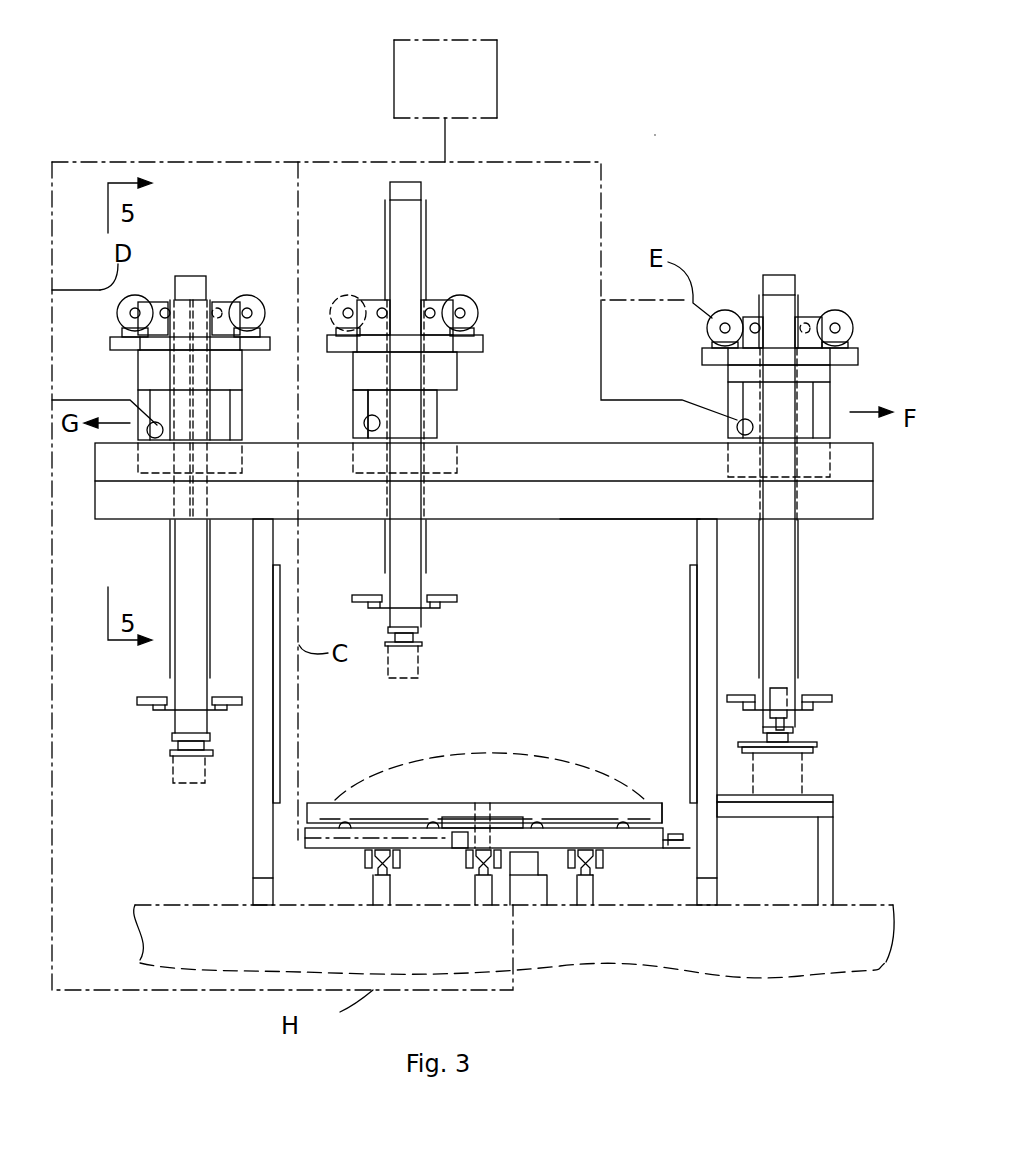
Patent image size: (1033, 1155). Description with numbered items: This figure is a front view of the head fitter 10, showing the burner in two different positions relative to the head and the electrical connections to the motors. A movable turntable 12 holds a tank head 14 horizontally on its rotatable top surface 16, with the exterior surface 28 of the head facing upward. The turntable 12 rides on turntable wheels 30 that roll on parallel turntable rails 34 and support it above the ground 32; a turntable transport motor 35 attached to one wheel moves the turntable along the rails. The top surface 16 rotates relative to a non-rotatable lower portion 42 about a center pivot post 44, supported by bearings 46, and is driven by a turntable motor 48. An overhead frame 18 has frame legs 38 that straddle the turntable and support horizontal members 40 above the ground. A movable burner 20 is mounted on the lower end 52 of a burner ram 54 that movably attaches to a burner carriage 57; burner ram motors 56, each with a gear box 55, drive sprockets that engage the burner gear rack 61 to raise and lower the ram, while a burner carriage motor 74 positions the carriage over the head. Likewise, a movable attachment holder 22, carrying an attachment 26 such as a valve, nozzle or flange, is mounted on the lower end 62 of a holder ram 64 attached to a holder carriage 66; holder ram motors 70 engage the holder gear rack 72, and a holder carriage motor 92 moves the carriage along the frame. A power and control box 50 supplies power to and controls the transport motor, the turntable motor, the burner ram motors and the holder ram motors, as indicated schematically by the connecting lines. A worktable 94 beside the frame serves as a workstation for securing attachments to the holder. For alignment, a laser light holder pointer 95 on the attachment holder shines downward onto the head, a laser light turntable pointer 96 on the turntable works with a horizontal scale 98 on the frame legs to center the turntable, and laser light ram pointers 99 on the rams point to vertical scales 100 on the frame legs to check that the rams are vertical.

The head fitter 10 is at (660, 132).
The movable turntable 12 is at (650, 810).
The tank head 14 is at (517, 757).
The rotatable top surface 16 is at (640, 805).
The overhead frame 18 is at (874, 452).
The movable burner 20 is at (173, 770).
The movable attachment holder 22 is at (818, 746).
The attachment 26 is at (803, 778).
The exterior surface 28 is at (440, 757).
The turntable wheels 30 is at (373, 870).
The ground 32 is at (850, 905).
The turntable rails 34 is at (376, 895).
The turntable transport motor 35 is at (523, 877).
The frame legs 38 is at (253, 820).
The horizontal members 40 is at (610, 521).
The non-rotatable lower portion 42 is at (633, 845).
The center pivot post 44 is at (492, 803).
The bearings 46 is at (340, 822).
The turntable motor 48 is at (452, 840).
The power and control box 50 is at (497, 55).
The lower end of burner ram 52 is at (172, 736).
The burner ram 54 is at (190, 553).
The gear box 55 is at (165, 306).
The burner ram motors 56 is at (136, 296).
The burner carriage 57 is at (243, 415).
The burner gear rack 61 is at (210, 543).
The lower end of holder ram 62 is at (795, 730).
The holder ram 64 is at (782, 612).
The holder carriage 66 is at (832, 390).
The holder ram motors 70 is at (722, 310).
The holder gear rack 72 is at (758, 540).
The burner carriage motor 74 is at (155, 422).
The holder carriage motor 92 is at (737, 430).
The worktable 94 is at (820, 800).
The laser light holder pointer 95 is at (778, 687).
The laser light turntable pointer 96 is at (678, 833).
The horizontal scale 98 is at (690, 848).
The laser light ram pointers 99 is at (240, 695).
The vertical scales 100 is at (281, 690).